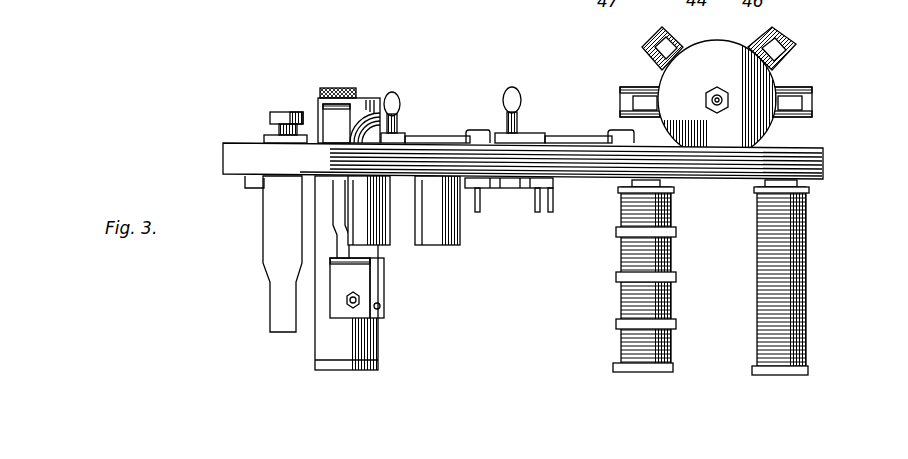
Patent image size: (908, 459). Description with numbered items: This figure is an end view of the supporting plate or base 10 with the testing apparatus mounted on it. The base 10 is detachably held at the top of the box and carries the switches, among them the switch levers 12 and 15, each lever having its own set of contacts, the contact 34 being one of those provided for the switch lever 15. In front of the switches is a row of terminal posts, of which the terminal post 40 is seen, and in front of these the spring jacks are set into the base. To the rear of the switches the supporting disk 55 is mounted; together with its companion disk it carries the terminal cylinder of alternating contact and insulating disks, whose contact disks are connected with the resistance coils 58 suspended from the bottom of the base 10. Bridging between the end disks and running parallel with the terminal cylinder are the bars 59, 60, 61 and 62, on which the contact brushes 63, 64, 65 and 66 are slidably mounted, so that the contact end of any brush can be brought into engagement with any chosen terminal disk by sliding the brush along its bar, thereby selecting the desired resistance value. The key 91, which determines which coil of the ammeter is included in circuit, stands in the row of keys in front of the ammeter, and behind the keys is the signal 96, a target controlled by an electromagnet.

The supporting plate or base 10 is at (806, 163).
The switch lever 12 is at (556, 136).
The switch lever 15 is at (441, 136).
The contact 34 is at (410, 136).
The terminal post 40 is at (362, 80).
The supporting disk 55 is at (728, 52).
The resistance coils 58 is at (758, 259).
The bar 59 is at (620, 98).
The bar 60 is at (672, 52).
The bar 61 is at (786, 56).
The bar 62 is at (795, 115).
The contact brush 63 is at (645, 96).
The contact brush 64 is at (655, 34).
The contact brush 65 is at (783, 40).
The contact brush 66 is at (812, 99).
The key 91 is at (288, 112).
The signal 96 is at (374, 102).